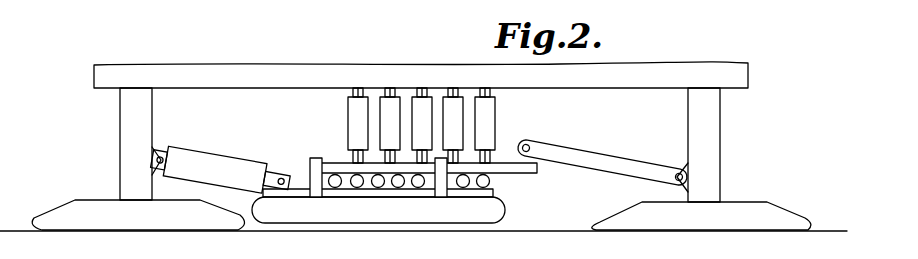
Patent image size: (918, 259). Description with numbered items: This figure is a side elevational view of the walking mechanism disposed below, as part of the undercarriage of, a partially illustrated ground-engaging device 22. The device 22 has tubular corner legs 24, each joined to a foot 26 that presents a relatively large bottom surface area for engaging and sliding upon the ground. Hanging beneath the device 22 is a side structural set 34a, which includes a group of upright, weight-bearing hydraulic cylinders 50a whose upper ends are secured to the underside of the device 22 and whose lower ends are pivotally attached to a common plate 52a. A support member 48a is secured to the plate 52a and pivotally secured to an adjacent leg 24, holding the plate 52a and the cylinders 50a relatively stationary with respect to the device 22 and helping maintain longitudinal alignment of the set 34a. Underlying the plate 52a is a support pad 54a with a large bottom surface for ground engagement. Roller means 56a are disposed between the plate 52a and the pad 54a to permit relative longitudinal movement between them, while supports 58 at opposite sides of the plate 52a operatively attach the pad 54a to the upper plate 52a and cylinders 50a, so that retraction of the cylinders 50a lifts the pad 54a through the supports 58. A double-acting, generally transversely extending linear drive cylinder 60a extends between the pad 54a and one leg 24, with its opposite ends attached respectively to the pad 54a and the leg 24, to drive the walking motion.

The ground-engaging device 22 is at (124, 59).
The tubular corner leg 24 is at (130, 121).
The foot 26 is at (72, 208).
The side structural set 34a is at (338, 128).
The upright hydraulic cylinders 50a is at (496, 107).
The plate 52a is at (502, 162).
The support member 48a is at (617, 163).
The roller means 56a is at (502, 183).
The supports 58 is at (317, 157).
The support pad 54a is at (333, 208).
The drive cylinder 60a is at (213, 160).